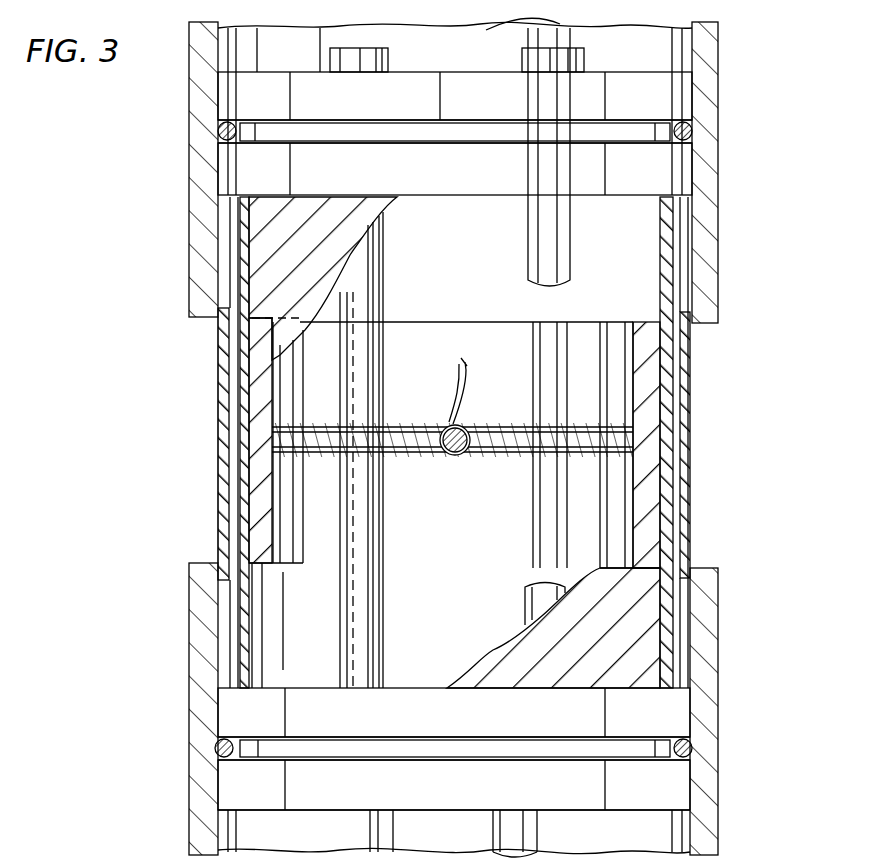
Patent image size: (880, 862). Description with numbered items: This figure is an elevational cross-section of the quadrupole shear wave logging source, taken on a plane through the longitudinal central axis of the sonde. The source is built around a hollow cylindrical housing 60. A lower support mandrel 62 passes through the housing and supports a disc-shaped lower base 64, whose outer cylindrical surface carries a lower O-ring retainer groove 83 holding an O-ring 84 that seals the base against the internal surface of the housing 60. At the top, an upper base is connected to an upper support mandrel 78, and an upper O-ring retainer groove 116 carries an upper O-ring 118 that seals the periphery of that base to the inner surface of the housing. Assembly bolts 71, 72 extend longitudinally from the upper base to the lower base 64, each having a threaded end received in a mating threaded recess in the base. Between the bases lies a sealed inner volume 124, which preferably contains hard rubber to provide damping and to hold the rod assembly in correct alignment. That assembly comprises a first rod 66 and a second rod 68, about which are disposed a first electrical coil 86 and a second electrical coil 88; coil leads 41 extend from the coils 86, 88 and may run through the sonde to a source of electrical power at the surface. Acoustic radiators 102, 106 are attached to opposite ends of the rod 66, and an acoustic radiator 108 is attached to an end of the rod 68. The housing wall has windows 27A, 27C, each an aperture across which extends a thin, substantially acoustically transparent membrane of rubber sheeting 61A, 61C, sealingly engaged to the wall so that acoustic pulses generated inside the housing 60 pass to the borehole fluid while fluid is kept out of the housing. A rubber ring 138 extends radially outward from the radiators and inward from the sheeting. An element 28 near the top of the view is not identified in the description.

The window 27A is at (190, 565).
The window 27C is at (720, 569).
The end plate 28 is at (455, 80).
The coil leads 41 is at (463, 369).
The hollow cylindrical housing 60 is at (720, 288).
The rubber sheeting 61A is at (222, 372).
The rubber sheeting 61C is at (688, 396).
The lower support mandrel 62 is at (523, 838).
The lower base 64 is at (673, 715).
The first rod 66 is at (505, 426).
The second rod 68 is at (452, 456).
The assembly bolt 71 is at (335, 58).
The assembly bolt 72 is at (585, 60).
The upper support mandrel 78 is at (488, 62).
The lower O-ring retainer groove 83 is at (620, 758).
The O-ring 84 is at (692, 748).
The first electrical coil 86 is at (407, 426).
The second electrical coil 88 is at (463, 455).
The acoustic radiator 102 is at (257, 343).
The acoustic radiator 106 is at (655, 346).
The acoustic radiator 108 is at (413, 322).
The upper O-ring retainer groove 116 is at (590, 140).
The upper O-ring 118 is at (692, 134).
The inner volume 124 is at (270, 236).
The rubber ring 138 is at (673, 243).